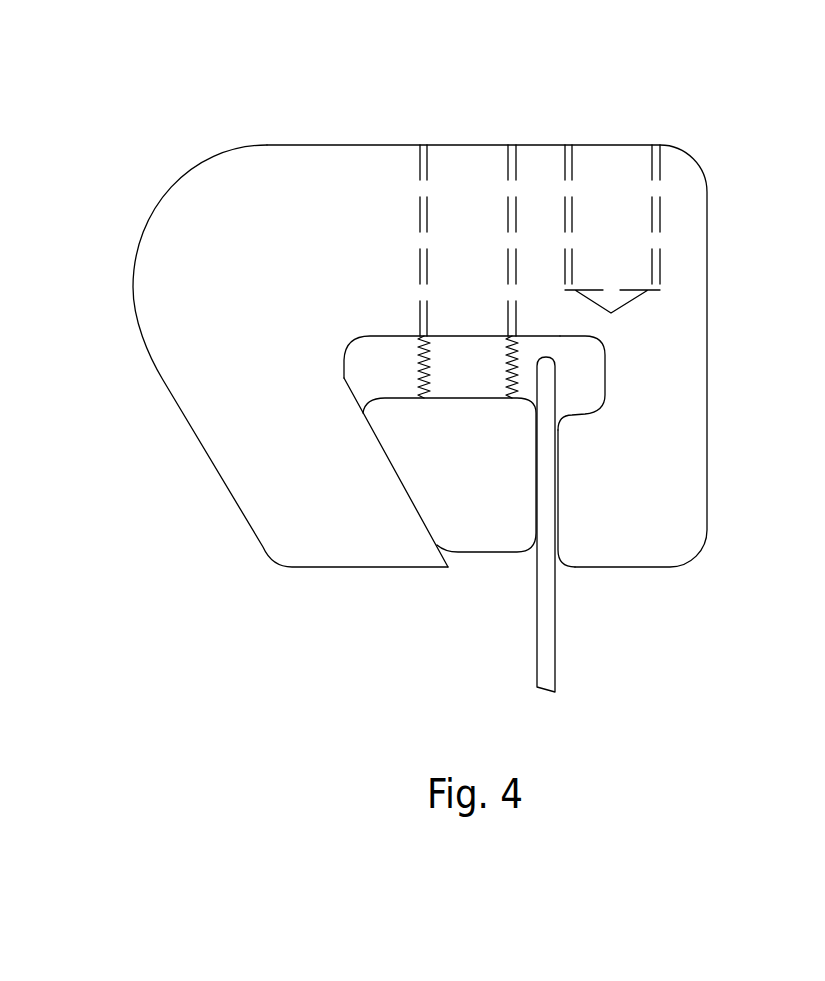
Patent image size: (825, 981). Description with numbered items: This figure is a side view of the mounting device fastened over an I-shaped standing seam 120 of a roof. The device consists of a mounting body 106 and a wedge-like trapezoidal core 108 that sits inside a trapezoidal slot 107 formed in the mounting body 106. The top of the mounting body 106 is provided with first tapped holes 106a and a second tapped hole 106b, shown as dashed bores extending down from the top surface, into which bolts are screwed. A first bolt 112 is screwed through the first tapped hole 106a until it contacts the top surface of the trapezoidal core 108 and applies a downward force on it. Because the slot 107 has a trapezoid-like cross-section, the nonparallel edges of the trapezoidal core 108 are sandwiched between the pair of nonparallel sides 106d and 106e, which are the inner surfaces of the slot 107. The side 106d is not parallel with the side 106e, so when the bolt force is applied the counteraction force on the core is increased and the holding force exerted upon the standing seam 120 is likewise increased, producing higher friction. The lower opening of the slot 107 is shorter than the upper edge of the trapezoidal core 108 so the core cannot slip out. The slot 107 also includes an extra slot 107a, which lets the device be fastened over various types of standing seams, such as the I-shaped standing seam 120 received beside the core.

The mounting body 106 is at (672, 363).
The first tapped hole 106a is at (420, 265).
The second tapped hole 106b is at (605, 145).
The nonparallel side 106d is at (379, 447).
The nonparallel side 106e is at (557, 495).
The trapezoidal slot 107 is at (373, 355).
The extra slot 107a is at (582, 362).
The trapezoidal core 108 is at (477, 530).
The first bolt 112 is at (453, 368).
The standing seam 120 is at (547, 627).